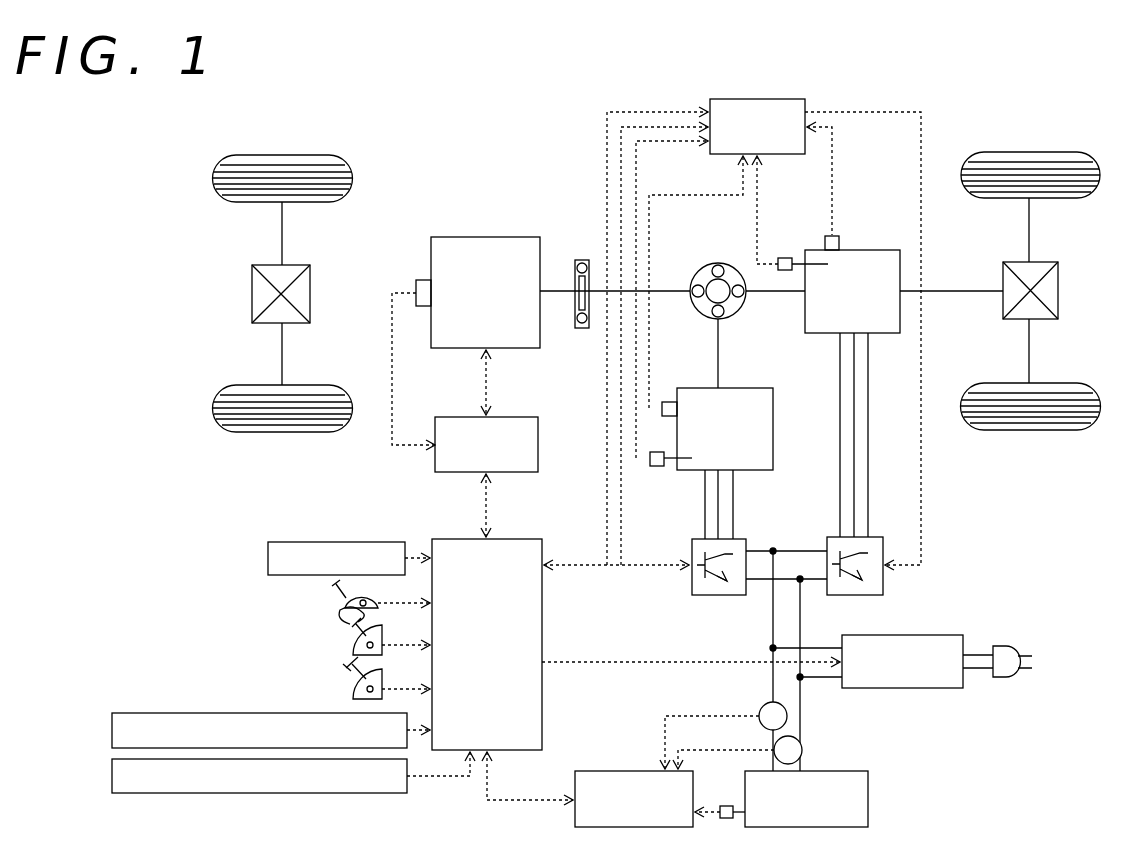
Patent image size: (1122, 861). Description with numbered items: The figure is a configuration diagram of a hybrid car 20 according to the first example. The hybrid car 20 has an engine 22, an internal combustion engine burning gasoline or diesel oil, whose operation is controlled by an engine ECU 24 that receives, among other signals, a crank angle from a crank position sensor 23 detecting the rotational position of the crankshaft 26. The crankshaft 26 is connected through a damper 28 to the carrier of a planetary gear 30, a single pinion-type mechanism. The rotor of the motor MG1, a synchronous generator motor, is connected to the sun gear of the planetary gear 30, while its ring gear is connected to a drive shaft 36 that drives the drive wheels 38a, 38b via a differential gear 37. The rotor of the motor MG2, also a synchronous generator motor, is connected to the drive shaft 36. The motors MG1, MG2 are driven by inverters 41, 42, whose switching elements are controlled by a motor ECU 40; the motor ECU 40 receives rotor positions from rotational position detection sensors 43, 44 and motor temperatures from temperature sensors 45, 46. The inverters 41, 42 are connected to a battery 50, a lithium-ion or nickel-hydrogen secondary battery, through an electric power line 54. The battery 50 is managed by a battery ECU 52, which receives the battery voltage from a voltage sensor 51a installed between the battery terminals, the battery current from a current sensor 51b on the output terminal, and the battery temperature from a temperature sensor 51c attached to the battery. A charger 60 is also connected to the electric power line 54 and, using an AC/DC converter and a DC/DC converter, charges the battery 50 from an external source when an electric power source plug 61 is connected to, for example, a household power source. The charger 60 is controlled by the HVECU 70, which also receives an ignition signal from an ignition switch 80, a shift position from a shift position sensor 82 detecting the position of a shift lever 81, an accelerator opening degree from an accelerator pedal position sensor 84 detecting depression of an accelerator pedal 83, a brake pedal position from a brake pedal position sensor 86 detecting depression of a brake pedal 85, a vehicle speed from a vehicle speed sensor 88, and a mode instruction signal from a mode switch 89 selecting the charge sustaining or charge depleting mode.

The hybrid car 20 is at (892, 70).
The engine 22 is at (512, 237).
The crank position sensor 23 is at (422, 280).
The engine ECU 24 is at (512, 417).
The crankshaft 26 is at (553, 290).
The damper 28 is at (582, 330).
The planetary gear 30 is at (716, 262).
The drive shaft 36 is at (968, 290).
The differential gear 37 is at (1040, 262).
The drive wheel 38a is at (1028, 152).
The drive wheel 38b is at (1030, 430).
The motor ECU 40 is at (768, 99).
The inverter 41 is at (740, 538).
The inverter 42 is at (875, 537).
The rotational position detection sensor 43 is at (670, 402).
The rotational position detection sensor 44 is at (836, 236).
The temperature sensor 45 is at (657, 467).
The temperature sensor 46 is at (787, 258).
The battery 50 is at (868, 798).
The voltage sensor 51a is at (803, 750).
The current sensor 51b is at (789, 716).
The temperature sensor 51c is at (727, 820).
The battery ECU 52 is at (638, 771).
The electric power line 54 is at (793, 578).
The charger 60 is at (920, 635).
The electric power source plug 61 is at (1008, 646).
The HVECU 70 is at (512, 539).
The ignition switch 80 is at (268, 558).
The shift lever 81 is at (340, 588).
The shift position sensor 82 is at (350, 606).
The accelerator pedal 83 is at (350, 630).
The accelerator pedal position sensor 84 is at (358, 650).
The brake pedal 85 is at (350, 672).
The brake pedal position sensor 86 is at (360, 692).
The vehicle speed sensor 88 is at (112, 731).
The mode switch 89 is at (112, 777).
The motor MG1 is at (742, 388).
The motor MG2 is at (873, 250).